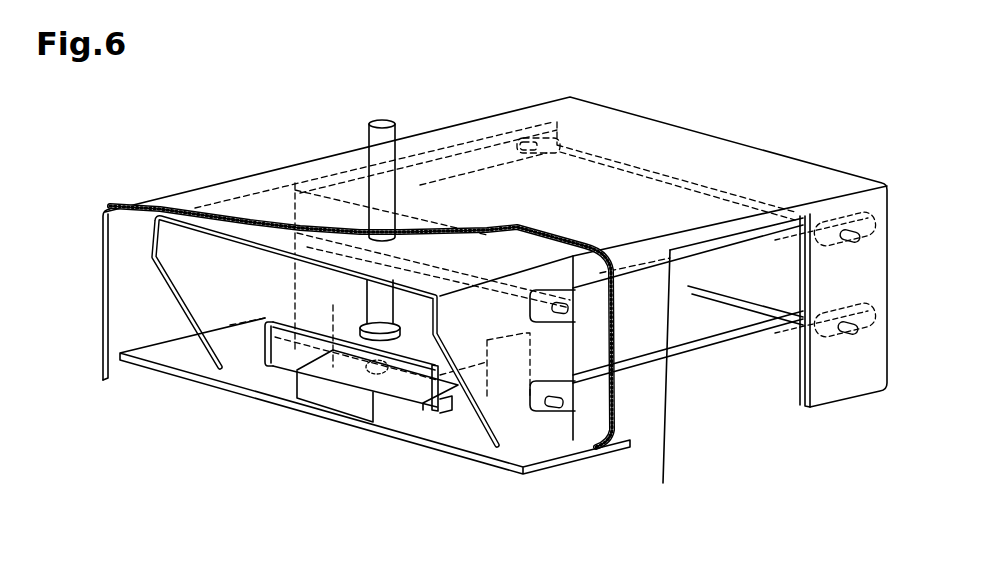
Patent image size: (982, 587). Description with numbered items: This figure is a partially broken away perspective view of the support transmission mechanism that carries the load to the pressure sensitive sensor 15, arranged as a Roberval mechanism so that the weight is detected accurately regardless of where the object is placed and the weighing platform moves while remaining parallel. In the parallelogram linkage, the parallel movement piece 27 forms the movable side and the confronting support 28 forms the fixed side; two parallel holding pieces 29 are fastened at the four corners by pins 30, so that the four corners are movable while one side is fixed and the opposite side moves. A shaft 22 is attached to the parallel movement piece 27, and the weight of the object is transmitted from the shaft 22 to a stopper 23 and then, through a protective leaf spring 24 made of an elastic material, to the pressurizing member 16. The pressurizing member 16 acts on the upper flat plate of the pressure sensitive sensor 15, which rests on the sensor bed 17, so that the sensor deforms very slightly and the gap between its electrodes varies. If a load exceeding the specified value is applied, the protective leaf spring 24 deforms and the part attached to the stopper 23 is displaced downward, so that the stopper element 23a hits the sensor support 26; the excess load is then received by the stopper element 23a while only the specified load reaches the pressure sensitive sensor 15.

The pressure sensitive sensor 15 is at (323, 383).
The pressurizing member 16 is at (378, 375).
The sensor bed 17 is at (340, 407).
The shaft 22 is at (380, 142).
The stopper 23 is at (262, 378).
The stopper element 23a is at (447, 403).
The protective leaf spring 24 is at (432, 410).
The sensor support 26 is at (503, 470).
The parallel movement piece 27 is at (192, 262).
The confronting support 28 is at (128, 305).
The parallel holding pieces 29 is at (720, 359).
The pins 30 is at (560, 313).